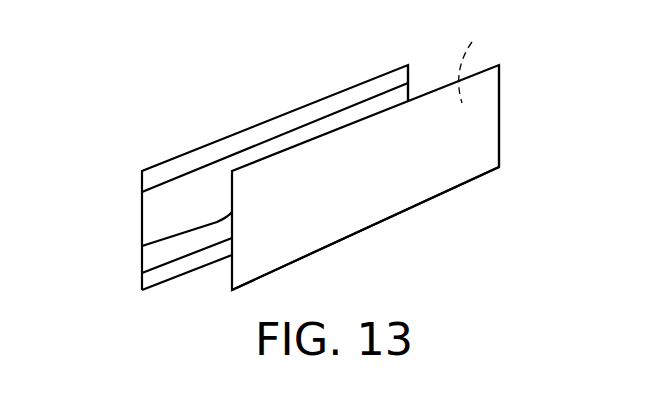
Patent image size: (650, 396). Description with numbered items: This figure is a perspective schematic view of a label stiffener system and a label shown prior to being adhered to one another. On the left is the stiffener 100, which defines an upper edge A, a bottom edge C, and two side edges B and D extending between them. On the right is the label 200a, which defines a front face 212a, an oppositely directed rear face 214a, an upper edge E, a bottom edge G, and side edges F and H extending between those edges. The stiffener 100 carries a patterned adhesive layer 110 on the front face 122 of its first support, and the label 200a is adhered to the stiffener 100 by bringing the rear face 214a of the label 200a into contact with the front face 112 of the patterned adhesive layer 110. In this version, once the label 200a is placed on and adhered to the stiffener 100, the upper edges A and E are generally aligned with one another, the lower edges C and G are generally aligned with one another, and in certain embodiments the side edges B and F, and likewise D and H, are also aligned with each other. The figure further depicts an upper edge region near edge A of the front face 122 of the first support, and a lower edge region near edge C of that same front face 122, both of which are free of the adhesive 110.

The stiffener 100 is at (232, 183).
The patterned adhesive layer 110 is at (129, 223).
The front face of the patterned adhesive layer 112 is at (163, 201).
The front face of the first support 122 is at (200, 155).
The label 200a is at (414, 154).
The front face of the label 212a is at (482, 152).
The rear face of the label 214a is at (474, 61).
The upper edge of the stiffener A is at (248, 128).
The side edge of the stiffener B is at (142, 198).
The bottom edge of the stiffener C is at (192, 271).
The side edge of the stiffener D is at (410, 72).
The upper edge of the label E is at (336, 130).
The side edge of the label F is at (142, 246).
The bottom edge of the label G is at (347, 238).
The side edge of the label H is at (499, 83).